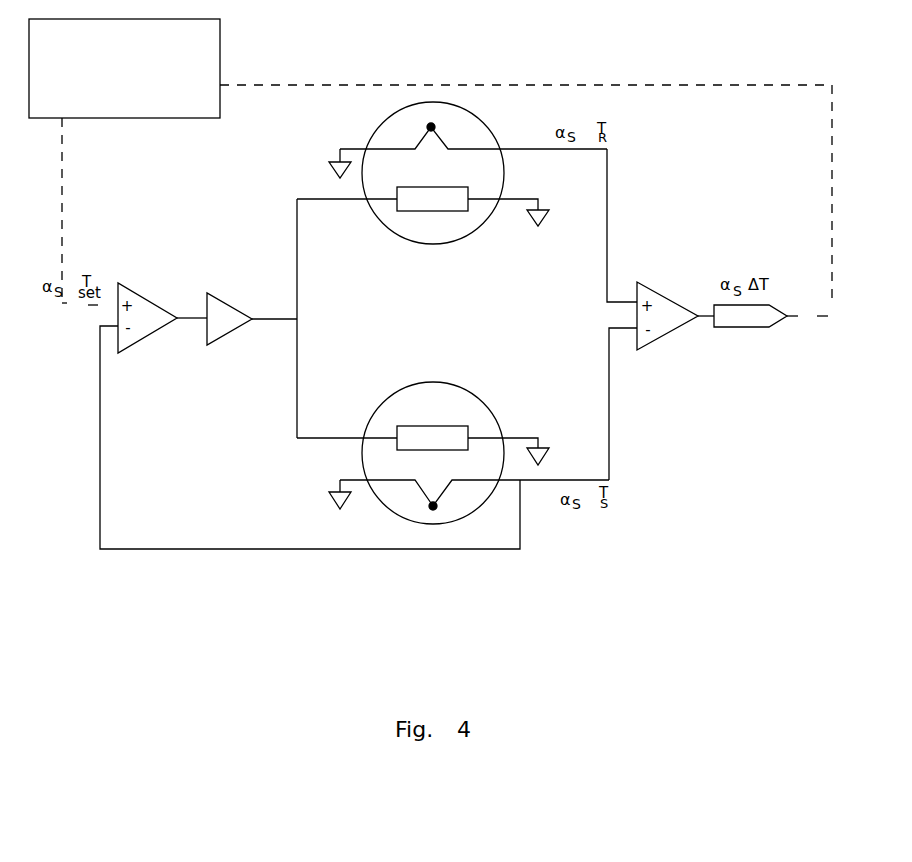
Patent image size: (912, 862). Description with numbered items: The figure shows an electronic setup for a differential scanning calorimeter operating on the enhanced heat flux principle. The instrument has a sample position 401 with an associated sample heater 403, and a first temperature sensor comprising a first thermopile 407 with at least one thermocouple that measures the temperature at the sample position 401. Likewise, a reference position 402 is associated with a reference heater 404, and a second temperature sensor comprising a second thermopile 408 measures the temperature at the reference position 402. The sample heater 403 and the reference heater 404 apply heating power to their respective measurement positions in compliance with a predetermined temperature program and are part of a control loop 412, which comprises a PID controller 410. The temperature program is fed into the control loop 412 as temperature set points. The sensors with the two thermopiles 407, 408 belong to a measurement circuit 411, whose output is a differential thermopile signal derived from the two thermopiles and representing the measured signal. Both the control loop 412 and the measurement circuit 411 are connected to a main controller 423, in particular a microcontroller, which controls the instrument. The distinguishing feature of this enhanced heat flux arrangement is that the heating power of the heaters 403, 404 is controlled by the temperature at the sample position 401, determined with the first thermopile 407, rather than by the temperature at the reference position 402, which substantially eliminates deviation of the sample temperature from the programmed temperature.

The main controller 423 is at (101, 80).
The reference position 402 is at (388, 117).
The second thermopile 408 is at (431, 127).
The reference heater 404 is at (439, 199).
The PID controller 410 is at (228, 313).
The measurement circuit 411 is at (608, 213).
The sample position 401 is at (393, 512).
The first thermopile 407 is at (433, 506).
The sample heater 403 is at (450, 435).
The control loop 412 is at (158, 549).